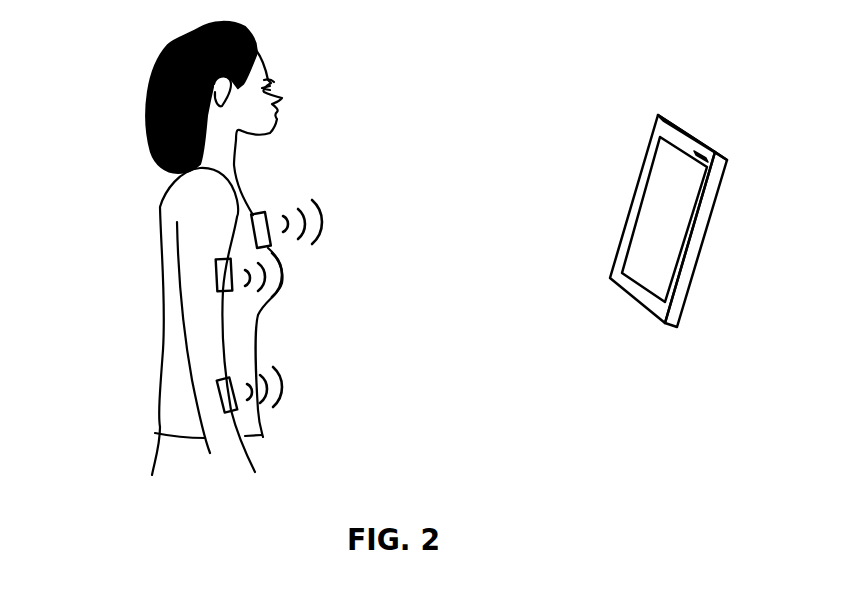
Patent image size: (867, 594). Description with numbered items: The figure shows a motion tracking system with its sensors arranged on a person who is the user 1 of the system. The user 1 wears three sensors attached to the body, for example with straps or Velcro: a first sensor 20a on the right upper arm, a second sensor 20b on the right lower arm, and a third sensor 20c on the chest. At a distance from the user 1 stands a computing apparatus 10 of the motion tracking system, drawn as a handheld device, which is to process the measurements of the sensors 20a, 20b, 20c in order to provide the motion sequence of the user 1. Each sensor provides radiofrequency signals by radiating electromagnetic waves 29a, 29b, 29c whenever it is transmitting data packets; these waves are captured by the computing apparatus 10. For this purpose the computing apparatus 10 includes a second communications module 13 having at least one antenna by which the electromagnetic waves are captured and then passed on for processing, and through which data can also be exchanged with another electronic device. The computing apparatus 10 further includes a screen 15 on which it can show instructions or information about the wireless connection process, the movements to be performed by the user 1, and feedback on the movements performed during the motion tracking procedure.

The user 1 is at (183, 185).
The computing apparatus 10 is at (633, 186).
The second communications module 13 is at (712, 128).
The screen 15 is at (655, 175).
The first sensor 20a is at (218, 276).
The second sensor 20b is at (219, 396).
The third sensor 20c is at (253, 231).
The electromagnetic waves 29a is at (295, 302).
The electromagnetic waves 29b is at (296, 409).
The electromagnetic waves 29c is at (330, 190).